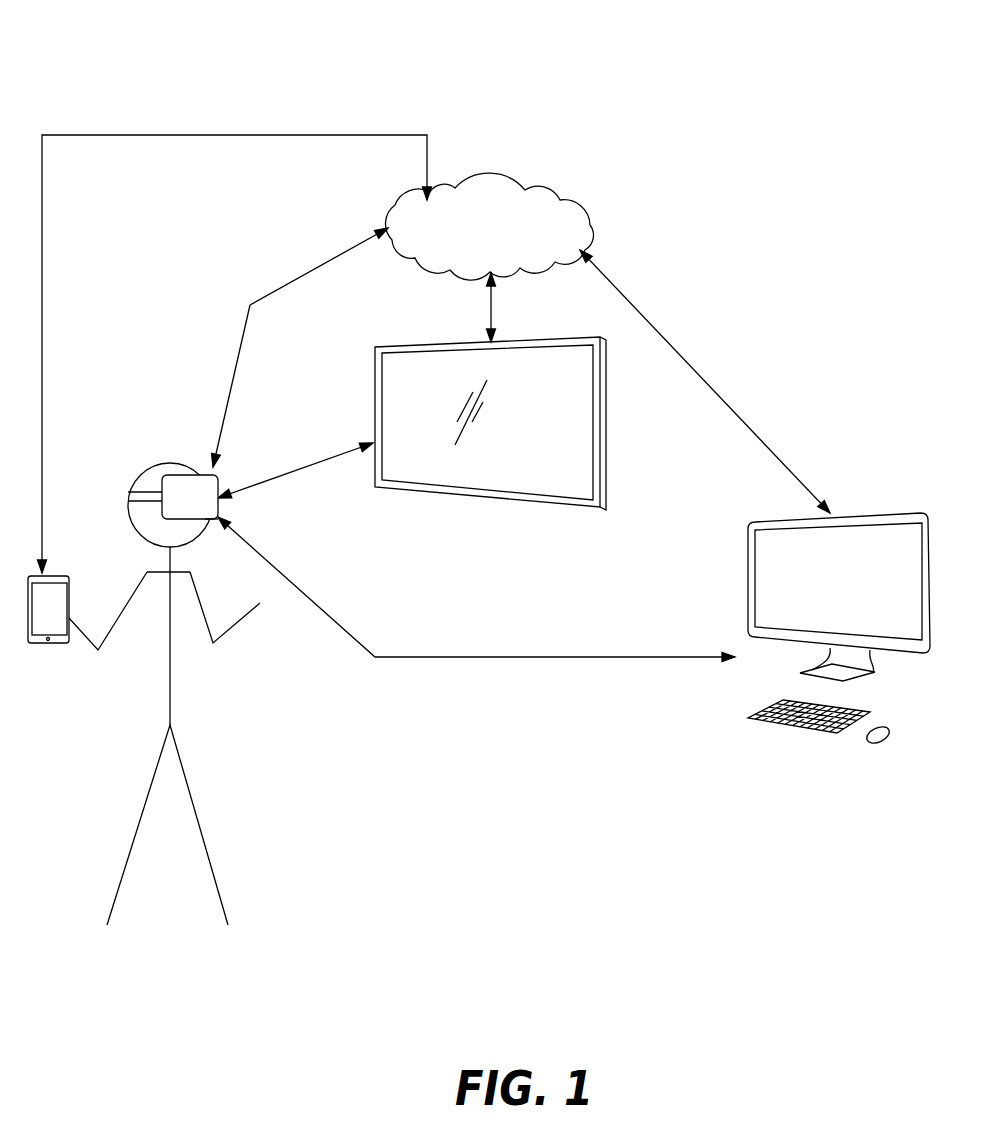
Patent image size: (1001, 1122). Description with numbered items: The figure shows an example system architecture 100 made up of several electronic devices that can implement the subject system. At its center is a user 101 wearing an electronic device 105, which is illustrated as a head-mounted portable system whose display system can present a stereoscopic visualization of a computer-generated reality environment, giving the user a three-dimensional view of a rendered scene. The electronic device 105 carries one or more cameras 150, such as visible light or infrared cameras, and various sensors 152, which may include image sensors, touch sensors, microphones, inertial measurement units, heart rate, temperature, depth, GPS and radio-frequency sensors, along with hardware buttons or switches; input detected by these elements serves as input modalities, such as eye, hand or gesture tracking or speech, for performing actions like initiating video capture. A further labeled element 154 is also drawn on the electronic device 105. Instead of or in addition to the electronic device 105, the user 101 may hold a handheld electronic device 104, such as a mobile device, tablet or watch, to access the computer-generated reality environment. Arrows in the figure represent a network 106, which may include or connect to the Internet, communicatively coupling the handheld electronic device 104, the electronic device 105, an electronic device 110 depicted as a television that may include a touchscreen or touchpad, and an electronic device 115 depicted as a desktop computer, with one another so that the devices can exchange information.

The system architecture 100 is at (172, 12).
The user 101 is at (167, 677).
The handheld electronic device 104 is at (55, 573).
The electronic device 105 is at (197, 474).
The network 106 is at (488, 185).
The electronic device 110 is at (480, 498).
The electronic device 115 is at (838, 768).
The camera 150 is at (170, 473).
The sensors 152 is at (153, 478).
The sensor 154 is at (208, 521).